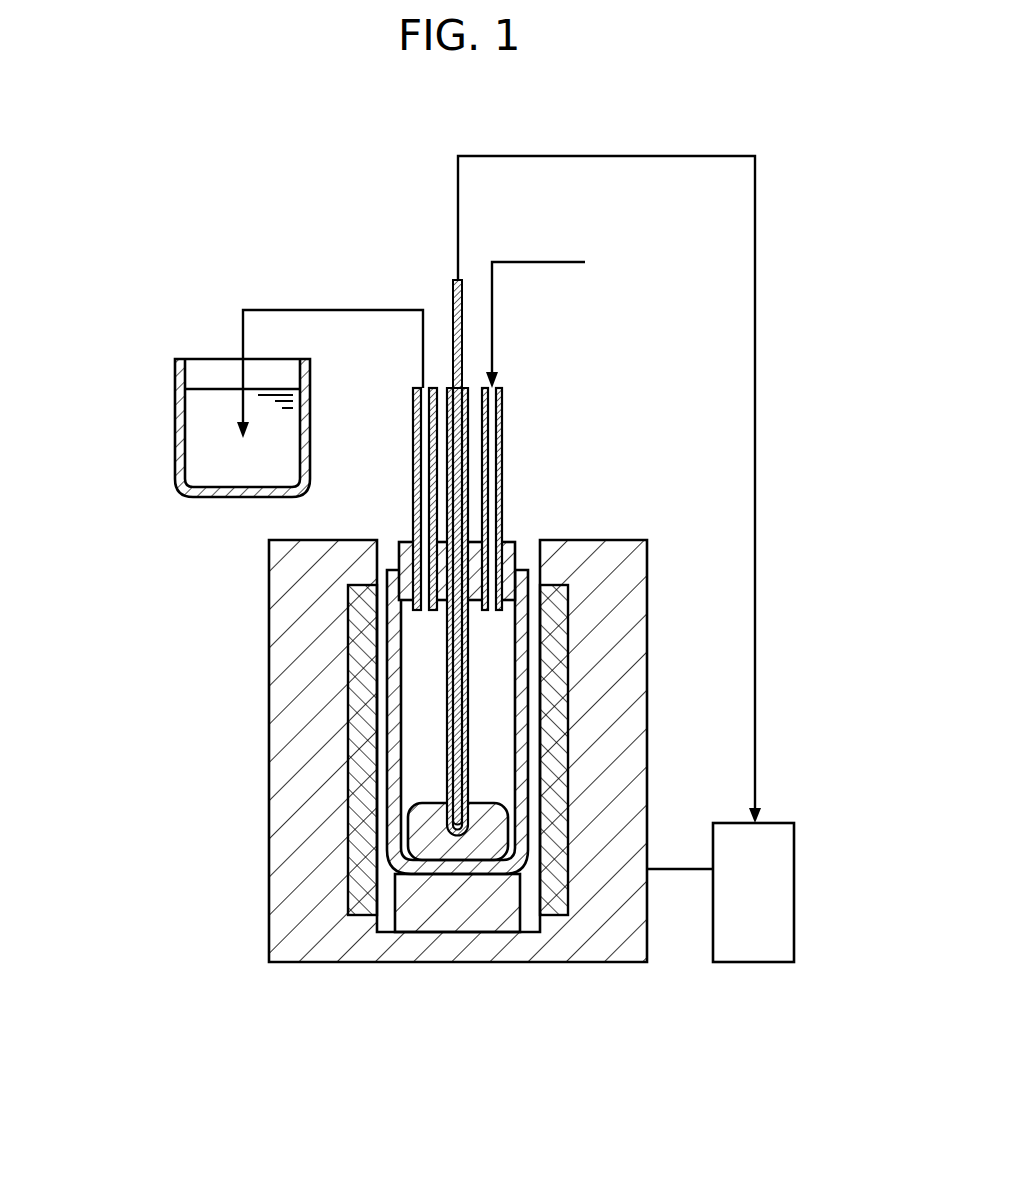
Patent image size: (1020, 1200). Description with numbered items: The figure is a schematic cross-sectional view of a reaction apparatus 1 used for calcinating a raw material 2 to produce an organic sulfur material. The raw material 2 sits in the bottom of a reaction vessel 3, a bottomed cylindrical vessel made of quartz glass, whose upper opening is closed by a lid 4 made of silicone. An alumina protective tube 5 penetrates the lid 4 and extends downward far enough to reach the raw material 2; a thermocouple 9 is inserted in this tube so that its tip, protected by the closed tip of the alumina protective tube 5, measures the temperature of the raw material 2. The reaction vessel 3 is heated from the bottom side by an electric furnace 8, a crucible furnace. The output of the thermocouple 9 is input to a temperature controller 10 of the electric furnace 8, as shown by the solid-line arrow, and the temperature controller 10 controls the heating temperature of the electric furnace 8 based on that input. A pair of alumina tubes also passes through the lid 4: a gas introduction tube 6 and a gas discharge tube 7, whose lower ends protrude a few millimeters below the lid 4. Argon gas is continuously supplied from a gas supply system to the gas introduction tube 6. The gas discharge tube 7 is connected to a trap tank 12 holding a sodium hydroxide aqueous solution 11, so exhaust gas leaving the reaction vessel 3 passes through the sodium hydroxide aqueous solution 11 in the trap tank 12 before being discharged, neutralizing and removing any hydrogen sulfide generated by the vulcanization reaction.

The reaction apparatus 1 is at (205, 178).
The raw material 2 is at (478, 852).
The reaction vessel 3 is at (523, 632).
The lid 4 is at (510, 553).
The alumina protective tube 5 is at (458, 720).
The gas introduction tube 6 is at (502, 443).
The gas discharge tube 7 is at (415, 497).
The electric furnace 8 is at (280, 778).
The thermocouple 9 is at (453, 296).
The temperature controller 10 is at (757, 934).
The sodium hydroxide aqueous solution 11 is at (215, 468).
The trap tank 12 is at (181, 442).